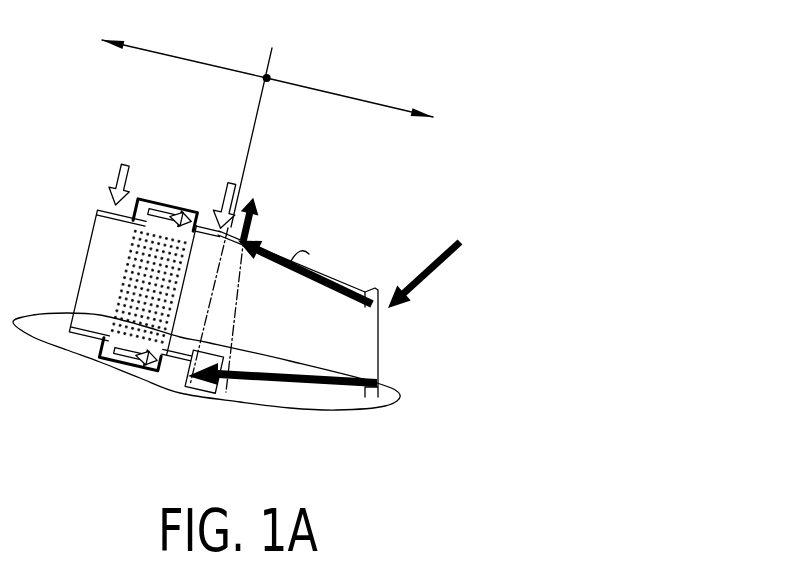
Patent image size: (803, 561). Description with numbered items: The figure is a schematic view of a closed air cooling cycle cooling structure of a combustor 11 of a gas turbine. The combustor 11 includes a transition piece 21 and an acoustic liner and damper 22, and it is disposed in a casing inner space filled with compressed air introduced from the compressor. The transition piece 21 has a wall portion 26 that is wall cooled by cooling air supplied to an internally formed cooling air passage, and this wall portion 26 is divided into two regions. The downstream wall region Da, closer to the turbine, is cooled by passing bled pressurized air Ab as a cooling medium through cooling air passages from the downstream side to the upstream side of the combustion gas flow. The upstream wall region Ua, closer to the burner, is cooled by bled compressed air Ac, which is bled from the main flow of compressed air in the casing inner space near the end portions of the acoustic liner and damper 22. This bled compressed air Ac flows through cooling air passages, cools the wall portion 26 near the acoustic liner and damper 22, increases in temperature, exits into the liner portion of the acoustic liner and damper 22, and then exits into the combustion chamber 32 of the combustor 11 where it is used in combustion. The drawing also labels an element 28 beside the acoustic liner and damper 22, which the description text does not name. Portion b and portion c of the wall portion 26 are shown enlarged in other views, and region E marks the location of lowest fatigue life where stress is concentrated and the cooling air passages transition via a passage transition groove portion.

The combustor 11 is at (218, 221).
The transition piece 21 is at (289, 219).
The acoustic liner and damper 22 is at (163, 184).
The wall portion 26 is at (323, 271).
The filter 28 is at (143, 307).
The combustion chamber 32 is at (323, 346).
The upstream wall region Ua is at (186, 57).
The downstream wall region Da is at (350, 93).
The bled compressed air Ac is at (228, 187).
The bled pressurized air Ab is at (438, 267).
The portion b is at (309, 254).
The portion c is at (392, 393).
The region of lowest fatigue life E is at (241, 365).